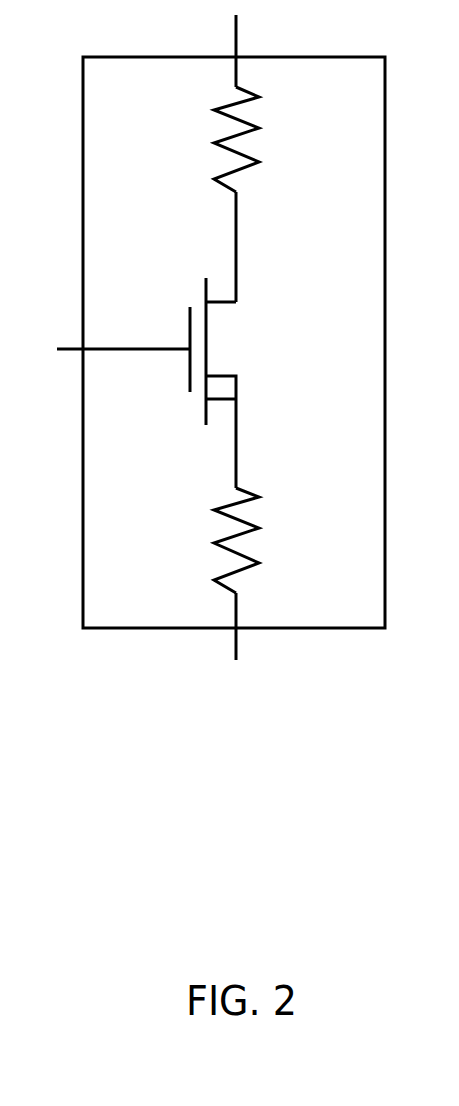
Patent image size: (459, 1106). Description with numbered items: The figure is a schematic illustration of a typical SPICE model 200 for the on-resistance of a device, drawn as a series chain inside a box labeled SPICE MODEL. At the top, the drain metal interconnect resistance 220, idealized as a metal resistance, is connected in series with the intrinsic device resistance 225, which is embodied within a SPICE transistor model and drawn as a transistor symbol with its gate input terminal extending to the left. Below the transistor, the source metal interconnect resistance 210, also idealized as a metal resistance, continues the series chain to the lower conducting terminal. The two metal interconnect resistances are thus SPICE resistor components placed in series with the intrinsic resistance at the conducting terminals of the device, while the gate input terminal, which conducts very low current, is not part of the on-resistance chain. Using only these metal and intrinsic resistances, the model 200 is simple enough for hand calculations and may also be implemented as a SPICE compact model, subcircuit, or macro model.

The SPICE model 200 is at (305, 628).
The drain metal interconnect resistance 220 is at (217, 144).
The intrinsic device resistance 225 is at (190, 326).
The source metal interconnect resistance 210 is at (212, 544).